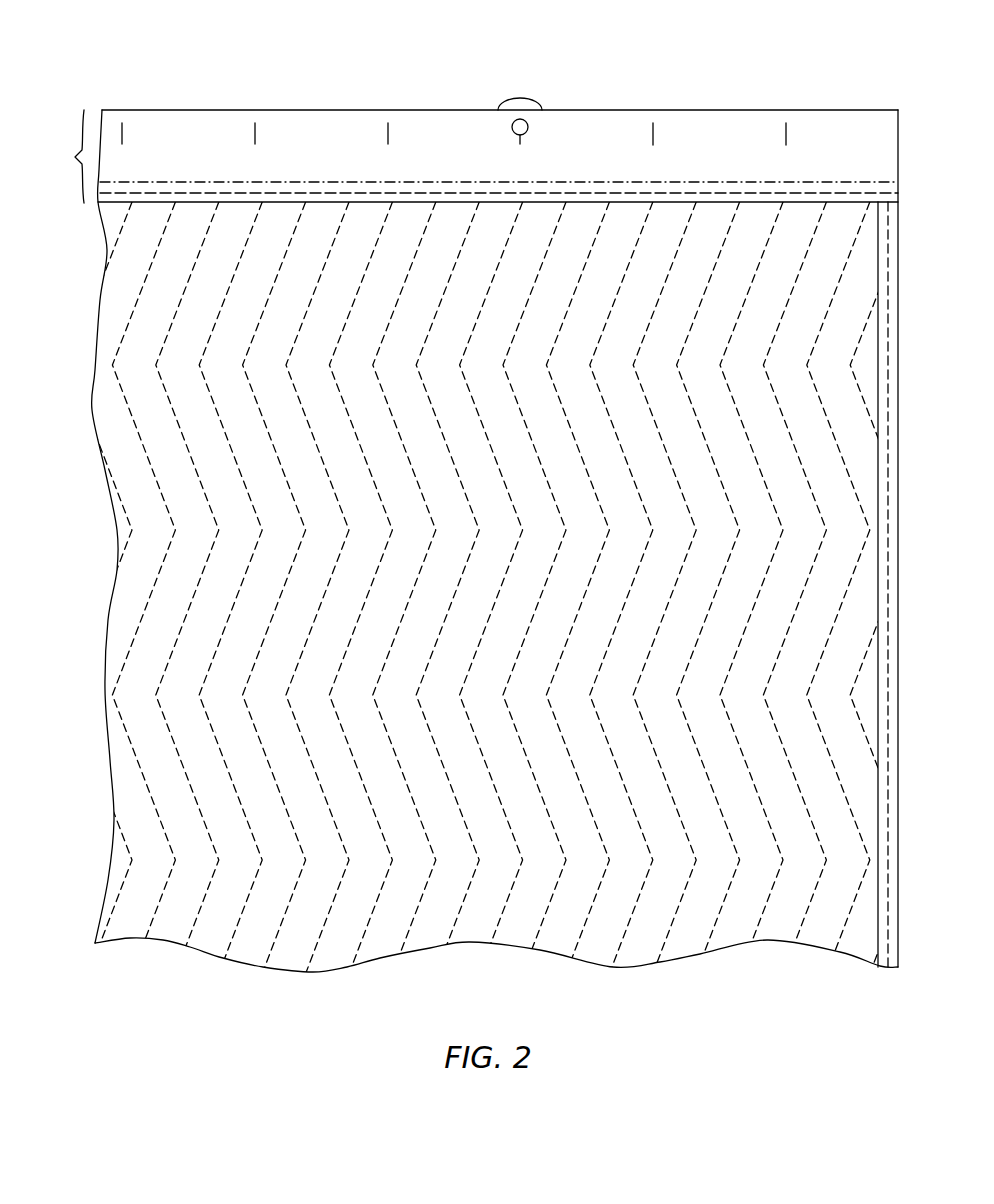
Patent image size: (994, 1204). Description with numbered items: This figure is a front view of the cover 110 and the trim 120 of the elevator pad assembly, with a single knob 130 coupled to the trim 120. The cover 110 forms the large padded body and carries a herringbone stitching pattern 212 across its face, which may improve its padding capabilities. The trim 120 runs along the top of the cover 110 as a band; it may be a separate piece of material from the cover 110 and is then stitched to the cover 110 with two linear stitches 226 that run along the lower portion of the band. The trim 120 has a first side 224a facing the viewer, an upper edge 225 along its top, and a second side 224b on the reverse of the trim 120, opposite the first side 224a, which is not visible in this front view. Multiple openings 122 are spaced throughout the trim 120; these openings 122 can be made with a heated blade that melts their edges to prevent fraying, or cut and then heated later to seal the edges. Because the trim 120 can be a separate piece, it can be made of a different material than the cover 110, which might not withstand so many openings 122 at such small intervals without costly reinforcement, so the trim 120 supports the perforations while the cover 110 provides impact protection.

The cover 110 is at (220, 808).
The trim 120 is at (74, 157).
The openings 122 is at (127, 130).
The knob 130 is at (517, 118).
The herringbone stitching pattern 212 is at (327, 913).
The first side 224a is at (808, 157).
The second side 224b is at (706, 108).
The upper edge 225 is at (580, 108).
The linear stitches 226 is at (640, 194).